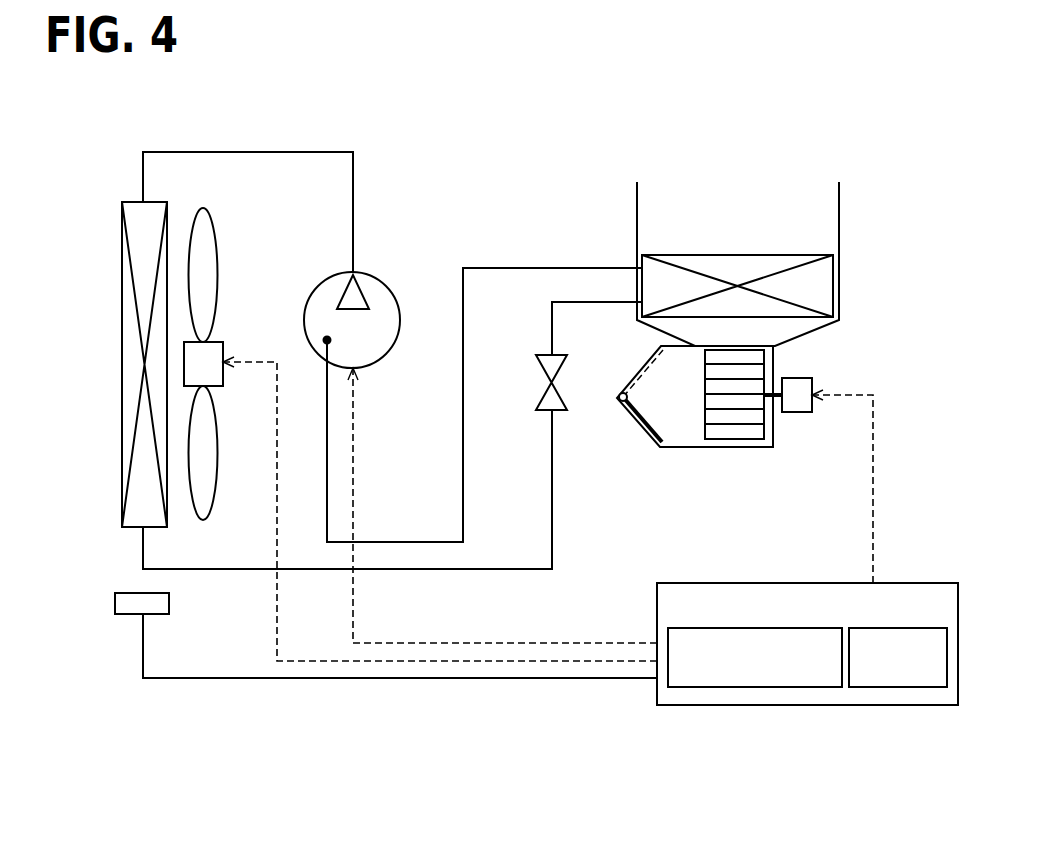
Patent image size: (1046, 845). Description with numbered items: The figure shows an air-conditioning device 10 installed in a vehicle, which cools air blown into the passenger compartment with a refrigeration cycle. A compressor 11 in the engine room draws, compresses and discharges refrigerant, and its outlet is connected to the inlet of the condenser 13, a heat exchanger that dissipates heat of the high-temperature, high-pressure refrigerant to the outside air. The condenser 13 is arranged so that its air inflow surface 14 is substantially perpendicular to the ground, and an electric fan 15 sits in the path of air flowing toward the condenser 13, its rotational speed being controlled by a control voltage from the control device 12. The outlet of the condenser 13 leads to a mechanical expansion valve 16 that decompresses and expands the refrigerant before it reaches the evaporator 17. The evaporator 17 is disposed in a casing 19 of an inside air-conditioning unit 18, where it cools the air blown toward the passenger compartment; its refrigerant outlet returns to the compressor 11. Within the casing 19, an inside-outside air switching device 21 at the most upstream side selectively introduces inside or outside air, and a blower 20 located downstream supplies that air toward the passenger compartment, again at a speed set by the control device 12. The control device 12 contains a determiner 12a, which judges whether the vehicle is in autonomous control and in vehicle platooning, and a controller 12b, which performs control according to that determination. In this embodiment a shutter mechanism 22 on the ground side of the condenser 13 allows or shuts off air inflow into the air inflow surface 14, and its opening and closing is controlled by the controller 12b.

The air-conditioning device 10 is at (529, 207).
The compressor 11 is at (390, 282).
The control device 12 is at (903, 583).
The determiner 12a is at (755, 688).
The controller 12b is at (873, 688).
The condenser 13 is at (135, 202).
The air inflow surface 14 is at (122, 268).
The electric fan 15 is at (217, 458).
The expansion valve 16 is at (543, 385).
The evaporator 17 is at (833, 283).
The inside air-conditioning unit 18 is at (840, 220).
The casing 19 is at (727, 448).
The blower 20 is at (797, 413).
The inside-outside air switching device 21 is at (653, 428).
The shutter mechanism 22 is at (128, 593).